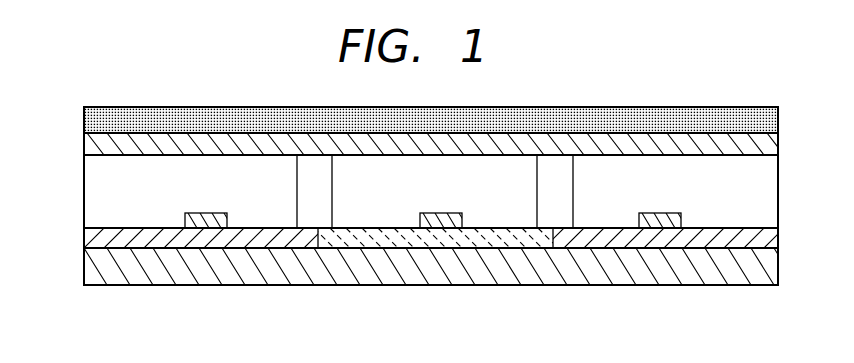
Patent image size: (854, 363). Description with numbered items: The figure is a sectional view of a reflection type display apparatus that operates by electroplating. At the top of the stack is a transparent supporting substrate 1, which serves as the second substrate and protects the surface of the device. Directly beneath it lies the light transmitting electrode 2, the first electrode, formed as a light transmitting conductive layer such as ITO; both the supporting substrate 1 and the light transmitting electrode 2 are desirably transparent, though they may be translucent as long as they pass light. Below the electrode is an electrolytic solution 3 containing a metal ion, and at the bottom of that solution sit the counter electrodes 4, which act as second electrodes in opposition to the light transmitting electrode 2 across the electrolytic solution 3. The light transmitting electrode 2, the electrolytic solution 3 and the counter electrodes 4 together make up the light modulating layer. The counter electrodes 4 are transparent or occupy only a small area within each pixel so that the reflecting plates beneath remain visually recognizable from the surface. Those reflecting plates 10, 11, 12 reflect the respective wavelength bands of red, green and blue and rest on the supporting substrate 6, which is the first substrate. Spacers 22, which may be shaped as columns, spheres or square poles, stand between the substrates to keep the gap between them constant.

The transparent supporting substrate 1 is at (90, 118).
The light transmitting electrode 2 is at (90, 147).
The electrolytic solution 3 is at (90, 192).
The counter electrode 4 is at (213, 215).
The supporting substrate 6 is at (90, 268).
The reflecting plate 10 is at (90, 238).
The reflecting plate 11 is at (388, 240).
The reflecting plate 12 is at (650, 240).
The spacer 22 is at (322, 190).